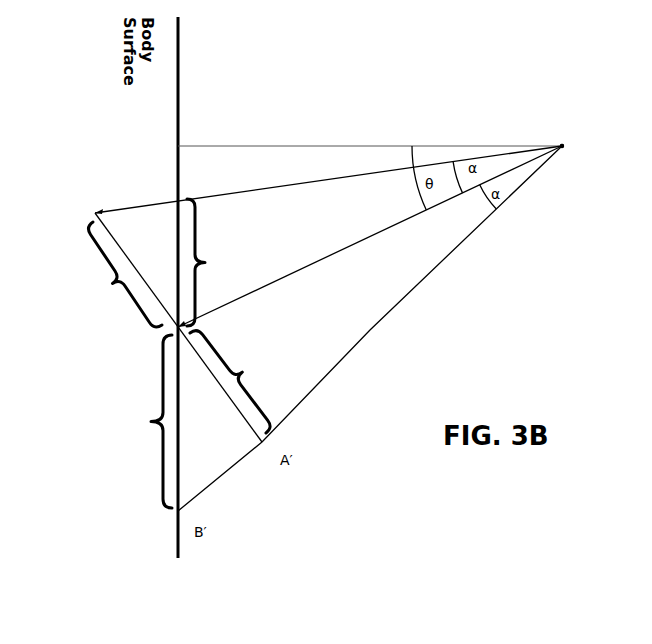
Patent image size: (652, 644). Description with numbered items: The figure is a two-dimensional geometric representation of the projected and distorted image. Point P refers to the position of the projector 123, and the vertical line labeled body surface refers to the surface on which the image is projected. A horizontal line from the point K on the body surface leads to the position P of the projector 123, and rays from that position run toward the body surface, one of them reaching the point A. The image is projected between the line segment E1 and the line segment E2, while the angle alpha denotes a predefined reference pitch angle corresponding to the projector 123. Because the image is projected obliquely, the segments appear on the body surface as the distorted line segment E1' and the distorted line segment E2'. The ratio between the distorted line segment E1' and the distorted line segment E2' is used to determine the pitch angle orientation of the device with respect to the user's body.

The projector 123 is at (404, 315).
The position of projector P is at (576, 147).
The point K on body surface K is at (357, 147).
The point A is at (318, 182).
The line segment E1 is at (122, 274).
The distorted line segment E1' is at (212, 262).
The line segment E2 is at (230, 382).
The distorted line segment E2' is at (147, 421).